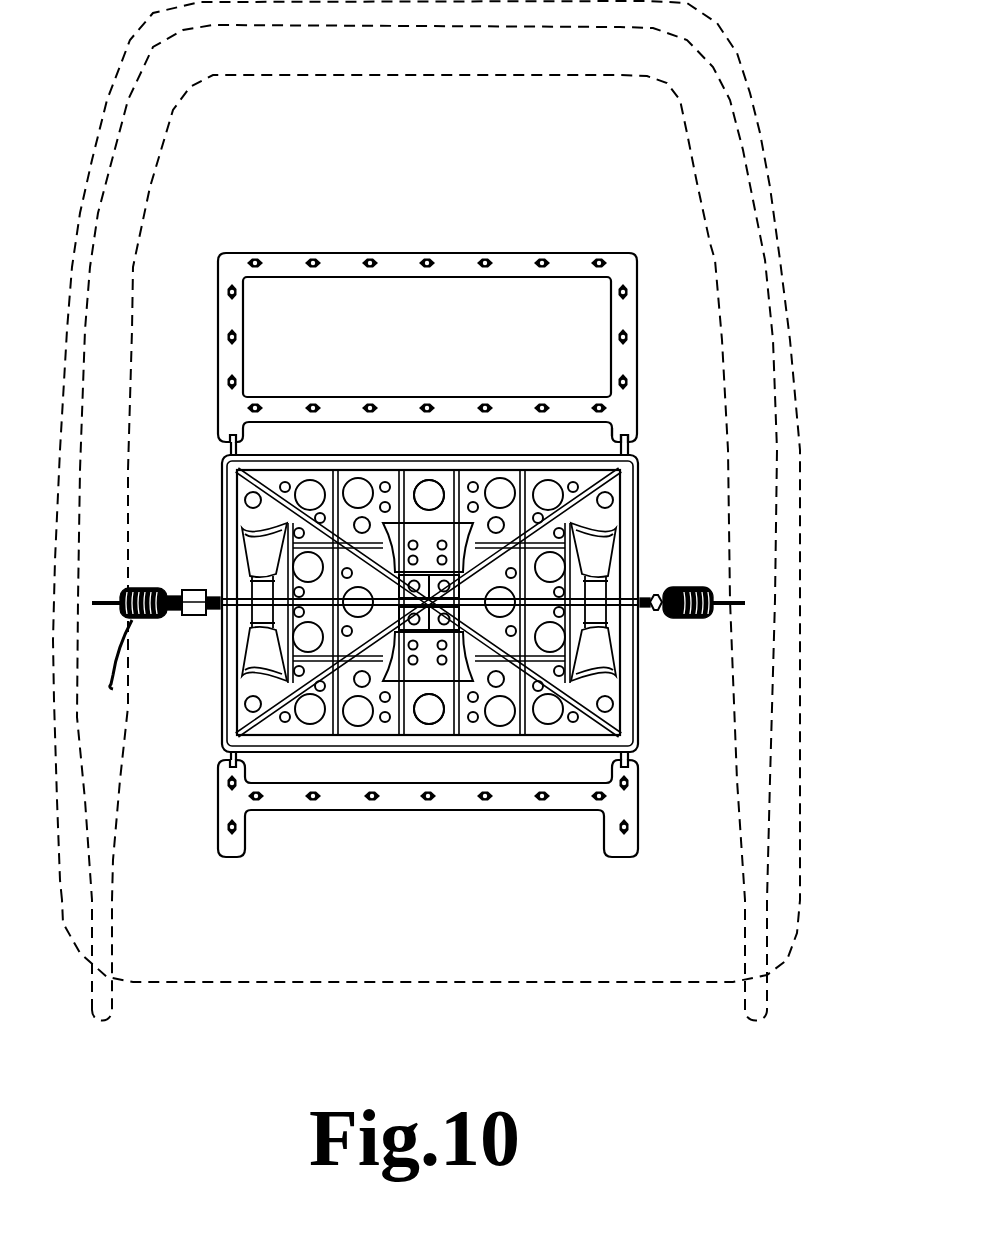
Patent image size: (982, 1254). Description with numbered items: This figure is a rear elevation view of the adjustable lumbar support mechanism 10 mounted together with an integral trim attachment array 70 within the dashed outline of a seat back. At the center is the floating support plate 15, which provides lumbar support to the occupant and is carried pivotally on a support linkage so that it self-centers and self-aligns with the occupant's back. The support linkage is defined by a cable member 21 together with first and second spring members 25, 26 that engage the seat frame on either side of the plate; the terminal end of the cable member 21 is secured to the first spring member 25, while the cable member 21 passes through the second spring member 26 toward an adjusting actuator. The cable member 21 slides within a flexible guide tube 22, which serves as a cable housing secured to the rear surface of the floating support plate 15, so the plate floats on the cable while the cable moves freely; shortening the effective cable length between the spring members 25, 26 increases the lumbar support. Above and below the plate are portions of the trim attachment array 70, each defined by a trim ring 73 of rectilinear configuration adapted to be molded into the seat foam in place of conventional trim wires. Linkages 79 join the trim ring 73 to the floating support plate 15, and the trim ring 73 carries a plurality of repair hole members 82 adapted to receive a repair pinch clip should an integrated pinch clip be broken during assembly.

The adjustable lumbar support mechanism 10 is at (205, 523).
The floating support plate 15 is at (648, 527).
The cable member 21 is at (641, 612).
The flexible guide tube 22 is at (568, 642).
The first spring member 25 is at (739, 600).
The second spring member 26 is at (147, 585).
The integral trim attachment array 70 is at (529, 298).
The trim ring 73 is at (628, 315).
The linkages 79 is at (633, 452).
The repair hole members 82 is at (425, 263).